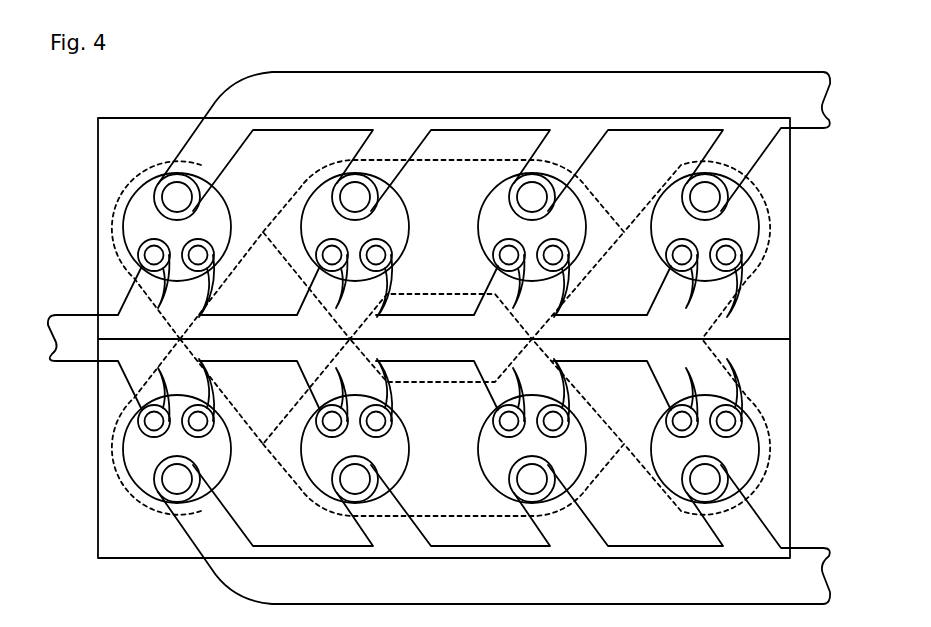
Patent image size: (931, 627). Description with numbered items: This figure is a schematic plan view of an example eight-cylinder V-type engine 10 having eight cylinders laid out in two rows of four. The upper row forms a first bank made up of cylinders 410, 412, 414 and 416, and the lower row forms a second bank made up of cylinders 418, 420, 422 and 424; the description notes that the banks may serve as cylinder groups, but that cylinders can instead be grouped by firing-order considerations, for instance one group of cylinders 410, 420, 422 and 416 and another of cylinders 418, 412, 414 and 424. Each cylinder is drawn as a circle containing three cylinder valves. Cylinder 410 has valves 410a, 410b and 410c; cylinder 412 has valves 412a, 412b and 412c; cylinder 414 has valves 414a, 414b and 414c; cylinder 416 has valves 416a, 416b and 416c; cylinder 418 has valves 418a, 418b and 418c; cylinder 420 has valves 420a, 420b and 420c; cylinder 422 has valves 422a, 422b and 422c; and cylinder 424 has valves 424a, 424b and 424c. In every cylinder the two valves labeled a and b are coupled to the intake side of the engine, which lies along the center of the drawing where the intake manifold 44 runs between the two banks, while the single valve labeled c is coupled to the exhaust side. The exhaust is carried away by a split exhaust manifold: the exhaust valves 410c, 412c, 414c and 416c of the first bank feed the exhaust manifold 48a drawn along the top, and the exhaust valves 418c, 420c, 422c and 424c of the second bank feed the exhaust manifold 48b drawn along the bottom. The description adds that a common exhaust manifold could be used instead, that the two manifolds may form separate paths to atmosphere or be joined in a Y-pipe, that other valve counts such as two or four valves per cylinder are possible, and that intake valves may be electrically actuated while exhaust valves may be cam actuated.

The engine 10 is at (98, 118).
The intake manifold 44 is at (89, 350).
The exhaust manifold 48a is at (811, 106).
The exhaust manifold 48b is at (809, 586).
The cylinder 410 is at (124, 198).
The cylinder valve 410a is at (150, 255).
The cylinder valve 410b is at (198, 258).
The cylinder valve 410c is at (178, 197).
The cylinder 412 is at (304, 198).
The cylinder valve 412a is at (330, 256).
The cylinder valve 412b is at (378, 256).
The cylinder valve 412c is at (356, 197).
The cylinder 414 is at (488, 193).
The cylinder valve 414a is at (507, 256).
The cylinder valve 414b is at (555, 257).
The cylinder valve 414c is at (532, 196).
The cylinder 416 is at (652, 197).
The cylinder valve 416a is at (681, 256).
The cylinder valve 416b is at (728, 258).
The cylinder valve 416c is at (706, 196).
The cylinder 418 is at (136, 485).
The cylinder valve 418a is at (150, 421).
The cylinder valve 418b is at (200, 418).
The cylinder valve 418c is at (178, 483).
The cylinder 420 is at (313, 485).
The cylinder valve 420a is at (328, 421).
The cylinder valve 420b is at (378, 421).
The cylinder valve 420c is at (357, 483).
The cylinder 422 is at (488, 487).
The cylinder valve 422a is at (508, 421).
The cylinder valve 422b is at (555, 418).
The cylinder valve 422c is at (533, 483).
The cylinder 424 is at (660, 483).
The cylinder valve 424a is at (681, 421).
The cylinder valve 424b is at (727, 417).
The cylinder valve 424c is at (708, 483).